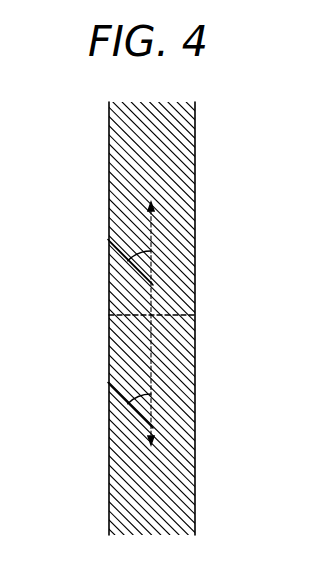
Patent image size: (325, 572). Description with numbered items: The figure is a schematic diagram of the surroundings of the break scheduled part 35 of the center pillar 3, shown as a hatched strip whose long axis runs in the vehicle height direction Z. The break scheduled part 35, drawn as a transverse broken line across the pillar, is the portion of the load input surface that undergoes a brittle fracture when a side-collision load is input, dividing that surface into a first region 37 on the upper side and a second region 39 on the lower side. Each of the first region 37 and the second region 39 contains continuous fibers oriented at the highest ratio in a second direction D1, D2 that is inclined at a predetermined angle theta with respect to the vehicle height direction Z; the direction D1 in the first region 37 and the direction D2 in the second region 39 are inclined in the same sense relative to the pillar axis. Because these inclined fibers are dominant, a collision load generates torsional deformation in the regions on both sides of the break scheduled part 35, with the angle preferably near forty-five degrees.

The center pillar 3 is at (96, 213).
The first region 37 is at (175, 247).
The second region 39 is at (177, 383).
The break scheduled part 35 is at (168, 316).
The vehicle height direction Z is at (151, 299).
The second direction of continuous fibers in first region D1 is at (124, 258).
The second direction of continuous fibers in second region D2 is at (124, 400).